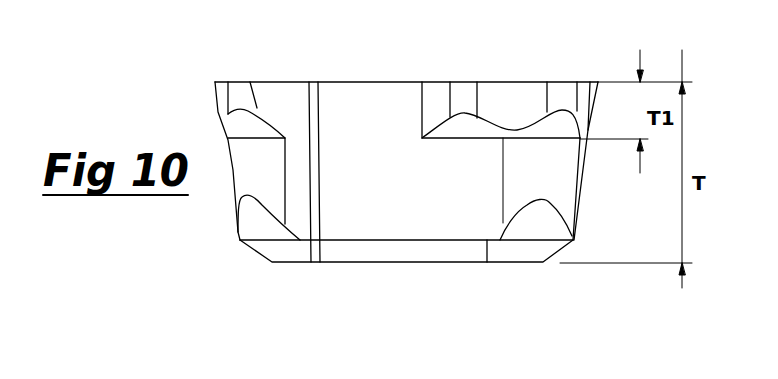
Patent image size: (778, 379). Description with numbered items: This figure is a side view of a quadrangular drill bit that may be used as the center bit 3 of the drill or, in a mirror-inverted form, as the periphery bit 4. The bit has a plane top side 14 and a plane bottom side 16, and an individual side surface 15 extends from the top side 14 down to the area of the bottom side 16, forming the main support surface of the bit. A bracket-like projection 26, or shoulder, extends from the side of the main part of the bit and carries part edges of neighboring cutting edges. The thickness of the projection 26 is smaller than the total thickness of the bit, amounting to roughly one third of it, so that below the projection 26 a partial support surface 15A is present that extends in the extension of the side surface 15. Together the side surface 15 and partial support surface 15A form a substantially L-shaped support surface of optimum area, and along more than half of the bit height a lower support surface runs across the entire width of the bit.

The center bit 3 is at (217, 137).
The periphery bit 4 is at (280, 95).
The top side 14 is at (370, 82).
The side surface 15 is at (332, 97).
The partial support surface 15A is at (460, 210).
The bottom side 16 is at (383, 263).
The bracket-like projection 26 is at (233, 94).